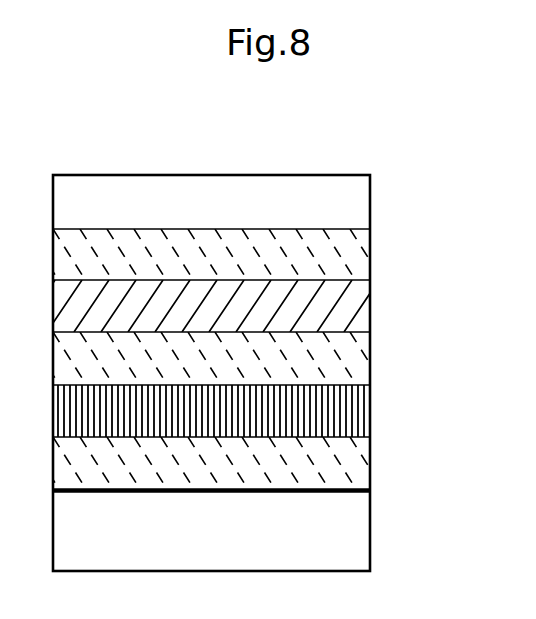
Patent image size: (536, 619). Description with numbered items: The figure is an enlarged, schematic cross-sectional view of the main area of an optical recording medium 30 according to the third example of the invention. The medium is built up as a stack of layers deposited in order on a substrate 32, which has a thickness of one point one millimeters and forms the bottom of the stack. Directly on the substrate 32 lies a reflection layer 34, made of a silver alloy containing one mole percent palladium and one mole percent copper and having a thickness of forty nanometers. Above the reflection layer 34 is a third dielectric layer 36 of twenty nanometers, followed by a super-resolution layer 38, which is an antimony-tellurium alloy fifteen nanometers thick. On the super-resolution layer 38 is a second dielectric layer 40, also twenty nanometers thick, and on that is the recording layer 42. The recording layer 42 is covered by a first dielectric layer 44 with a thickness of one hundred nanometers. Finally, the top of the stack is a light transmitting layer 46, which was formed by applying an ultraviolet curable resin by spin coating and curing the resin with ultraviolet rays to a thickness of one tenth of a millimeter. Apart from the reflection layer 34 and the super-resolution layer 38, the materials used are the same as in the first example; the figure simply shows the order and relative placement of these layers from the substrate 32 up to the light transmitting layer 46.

The optical recording medium 30 is at (340, 168).
The substrate 32 is at (358, 524).
The reflection layer 34 is at (360, 491).
The third dielectric layer 36 is at (360, 462).
The super-resolution layer 38 is at (360, 408).
The second dielectric layer 40 is at (362, 364).
The recording layer 42 is at (360, 314).
The first dielectric layer 44 is at (362, 262).
The light transmitting layer 46 is at (363, 197).